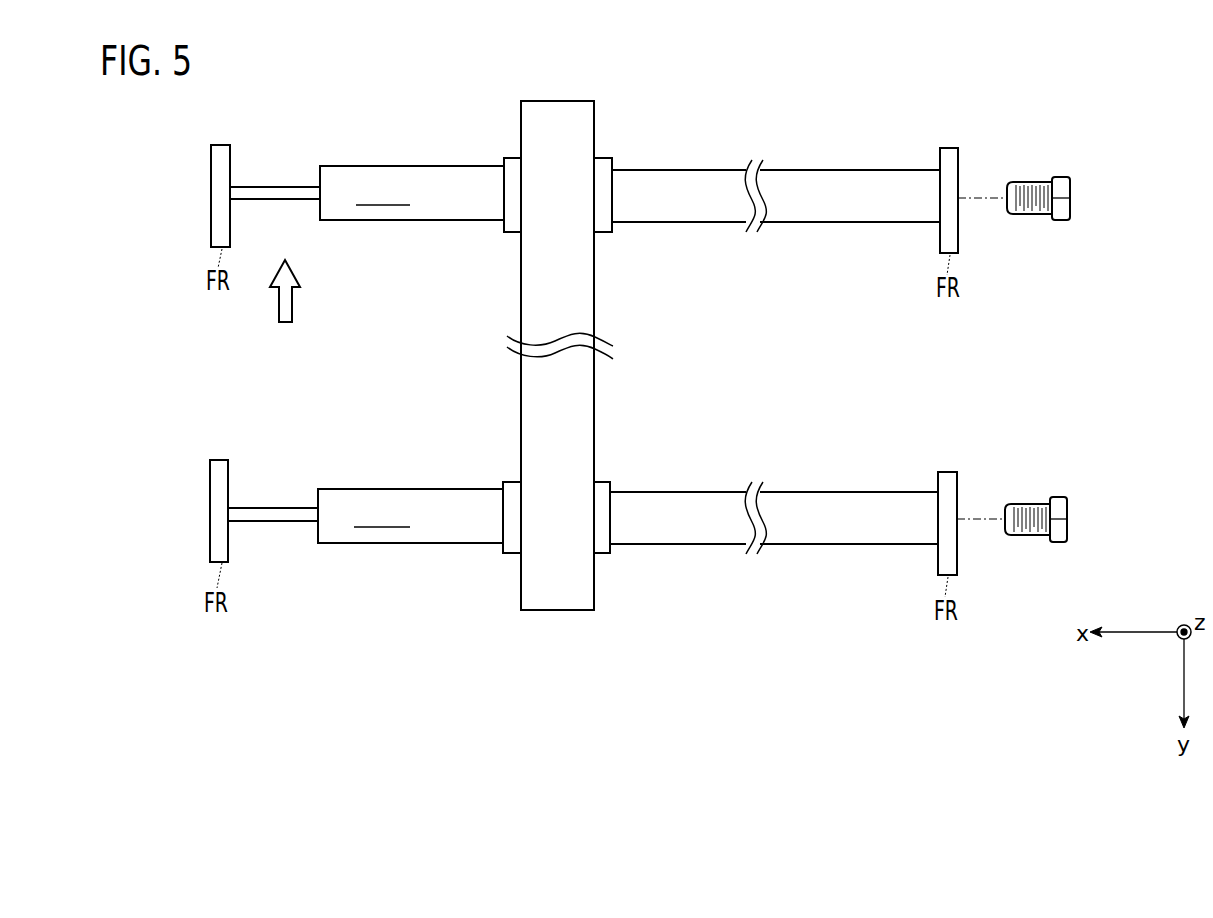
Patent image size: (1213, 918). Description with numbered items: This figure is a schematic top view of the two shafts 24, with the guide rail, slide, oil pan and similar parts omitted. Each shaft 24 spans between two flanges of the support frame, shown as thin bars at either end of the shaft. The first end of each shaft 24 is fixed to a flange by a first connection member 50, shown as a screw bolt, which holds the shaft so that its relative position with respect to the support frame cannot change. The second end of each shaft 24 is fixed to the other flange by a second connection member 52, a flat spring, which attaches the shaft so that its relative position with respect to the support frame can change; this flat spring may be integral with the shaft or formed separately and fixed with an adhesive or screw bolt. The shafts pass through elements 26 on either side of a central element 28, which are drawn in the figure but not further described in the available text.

The shaft 24 is at (825, 172).
The bearing flange 26 is at (605, 202).
The support block 28 is at (543, 117).
The first connection member 50 is at (1060, 222).
The second connection member 52 is at (256, 190).